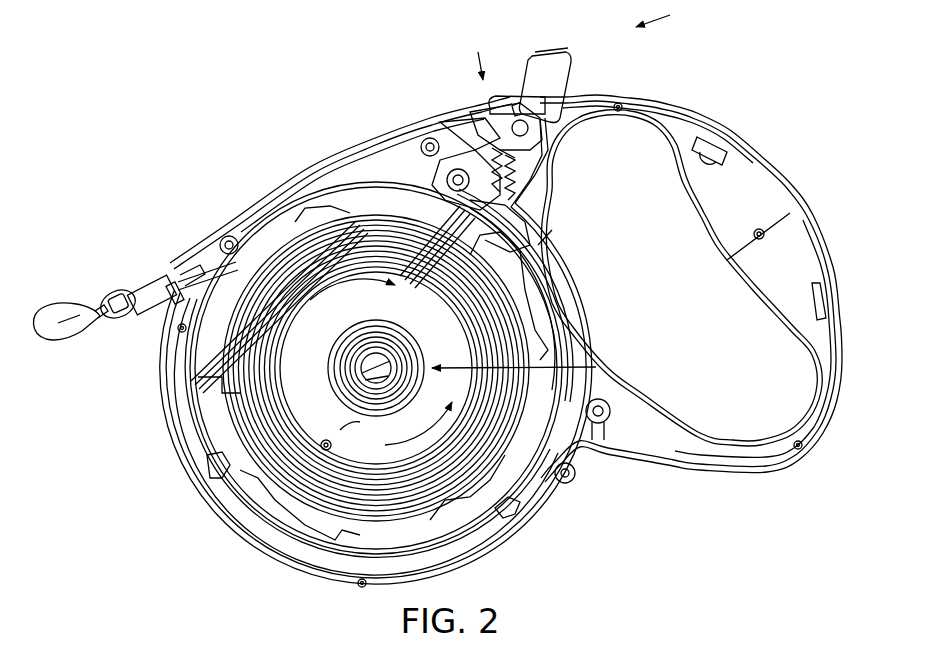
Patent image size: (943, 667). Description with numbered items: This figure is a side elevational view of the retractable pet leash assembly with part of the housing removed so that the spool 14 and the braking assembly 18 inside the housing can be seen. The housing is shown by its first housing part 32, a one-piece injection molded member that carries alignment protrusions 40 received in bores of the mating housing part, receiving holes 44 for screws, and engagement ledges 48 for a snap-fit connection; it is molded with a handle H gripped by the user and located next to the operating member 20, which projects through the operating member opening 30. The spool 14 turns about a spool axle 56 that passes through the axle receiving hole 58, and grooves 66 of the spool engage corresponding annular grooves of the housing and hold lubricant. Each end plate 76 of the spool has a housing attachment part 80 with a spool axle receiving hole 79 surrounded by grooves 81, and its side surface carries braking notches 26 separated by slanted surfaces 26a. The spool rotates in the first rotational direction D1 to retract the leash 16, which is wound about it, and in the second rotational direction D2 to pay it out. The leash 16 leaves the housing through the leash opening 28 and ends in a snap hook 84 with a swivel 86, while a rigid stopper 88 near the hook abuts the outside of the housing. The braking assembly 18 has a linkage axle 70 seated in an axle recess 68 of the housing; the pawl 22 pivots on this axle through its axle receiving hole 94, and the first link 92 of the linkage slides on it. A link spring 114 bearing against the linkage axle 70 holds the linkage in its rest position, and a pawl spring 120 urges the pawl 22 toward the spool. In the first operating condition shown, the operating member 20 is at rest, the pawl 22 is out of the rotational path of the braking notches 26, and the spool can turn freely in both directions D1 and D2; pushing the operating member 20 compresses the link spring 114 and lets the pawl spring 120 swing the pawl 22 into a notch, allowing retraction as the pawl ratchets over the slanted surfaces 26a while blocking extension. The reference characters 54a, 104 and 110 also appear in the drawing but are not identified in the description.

The spool 14 is at (465, 527).
The leash 16 is at (200, 270).
The braking assembly 18 is at (475, 54).
The operating member 20 is at (572, 66).
The pawl 22 is at (549, 237).
The braking notches 26 is at (560, 330).
The slanted surface 26a is at (558, 390).
The leash opening 28 is at (162, 326).
The operating member opening 30 is at (512, 95).
The first housing part 32 is at (668, 14).
The alignment protrusions 40 is at (620, 104).
The receiving holes 44 is at (222, 236).
The engagement ledges 48 is at (207, 462).
The spool chamber wall 54a is at (555, 310).
The spool axle 56 is at (360, 365).
The axle receiving hole 58 is at (375, 355).
The grooves 66 is at (388, 325).
The axle recess 68 is at (400, 350).
The linkage axle 70 is at (447, 178).
The end plates 76 is at (280, 510).
The spool axle receiving hole 79 is at (392, 378).
The housing attachment part 80 is at (521, 368).
The grooves 81 is at (336, 431).
The snap hook 84 is at (52, 312).
The swivel 86 is at (102, 300).
The stopper 88 is at (155, 283).
The first link 92 is at (470, 112).
The axle receiving hole 94 is at (520, 200).
The trigger button 104 is at (548, 46).
The spring 110 is at (516, 186).
The link spring 114 is at (440, 128).
The pawl spring 120 is at (545, 165).
The first rotational direction D1 is at (342, 318).
The second rotational direction D2 is at (390, 440).
The handle H is at (748, 156).